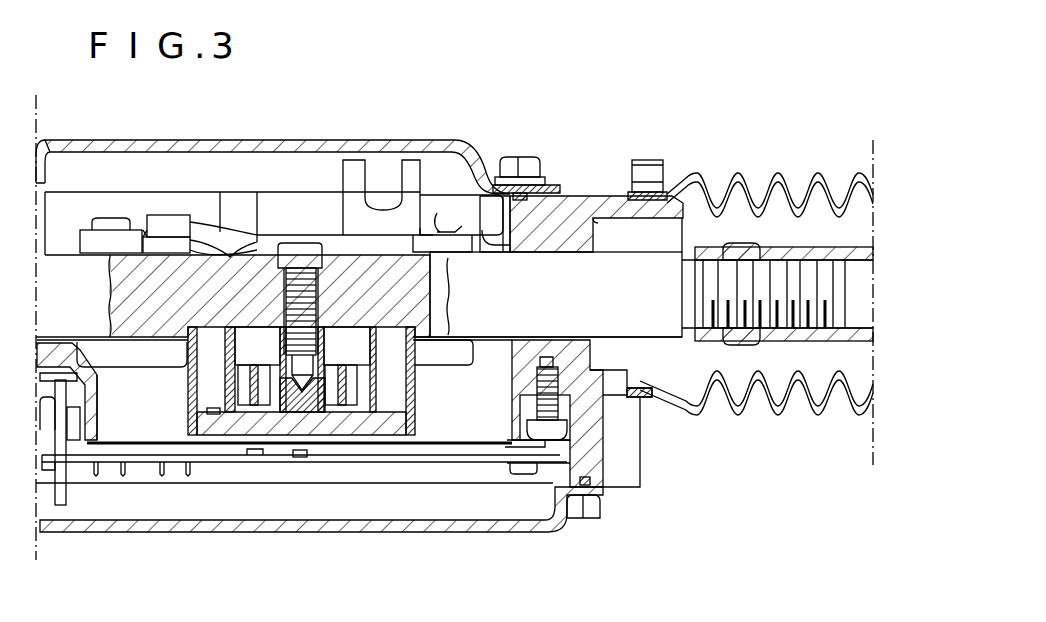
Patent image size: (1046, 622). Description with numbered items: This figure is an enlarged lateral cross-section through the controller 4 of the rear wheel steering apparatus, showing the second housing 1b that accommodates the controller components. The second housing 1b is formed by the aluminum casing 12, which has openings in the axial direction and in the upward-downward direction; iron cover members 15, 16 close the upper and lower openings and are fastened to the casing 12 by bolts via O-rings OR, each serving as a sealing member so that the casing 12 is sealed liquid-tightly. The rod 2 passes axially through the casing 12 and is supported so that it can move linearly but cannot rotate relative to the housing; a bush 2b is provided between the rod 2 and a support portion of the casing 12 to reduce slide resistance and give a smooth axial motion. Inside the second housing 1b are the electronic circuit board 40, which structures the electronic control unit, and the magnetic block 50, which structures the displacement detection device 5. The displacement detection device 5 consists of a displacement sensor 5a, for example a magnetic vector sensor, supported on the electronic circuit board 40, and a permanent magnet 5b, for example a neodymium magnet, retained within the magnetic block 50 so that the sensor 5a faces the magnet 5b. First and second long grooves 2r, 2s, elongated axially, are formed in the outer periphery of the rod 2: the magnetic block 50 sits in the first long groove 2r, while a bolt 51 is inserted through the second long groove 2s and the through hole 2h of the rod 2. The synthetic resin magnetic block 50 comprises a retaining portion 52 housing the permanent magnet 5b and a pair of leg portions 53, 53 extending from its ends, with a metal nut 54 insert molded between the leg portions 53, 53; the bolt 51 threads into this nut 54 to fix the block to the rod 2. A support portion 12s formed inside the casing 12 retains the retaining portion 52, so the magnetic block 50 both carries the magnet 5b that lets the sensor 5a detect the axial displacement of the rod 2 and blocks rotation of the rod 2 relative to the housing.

The second housing 1b is at (138, 136).
The rod 2 is at (567, 275).
The second long groove 2s is at (193, 262).
The through hole 2h is at (283, 250).
The bush 2b is at (684, 214).
The first long groove 2r is at (200, 440).
The controller 4 is at (445, 158).
The displacement detection device 5 is at (259, 474).
The displacement sensor 5a is at (300, 458).
The permanent magnet 5b is at (227, 428).
The casing 12 is at (603, 207).
The support portion 12s is at (604, 445).
The cover member 15 is at (468, 148).
The cover member 16 is at (546, 531).
The electronic circuit board 40 is at (403, 464).
The magnetic block 50 is at (420, 408).
The bolt 51 is at (303, 258).
The retaining portion 52 is at (378, 400).
The leg portion 53 is at (188, 385).
The nut 54 is at (306, 398).
The O-ring OR is at (524, 196).